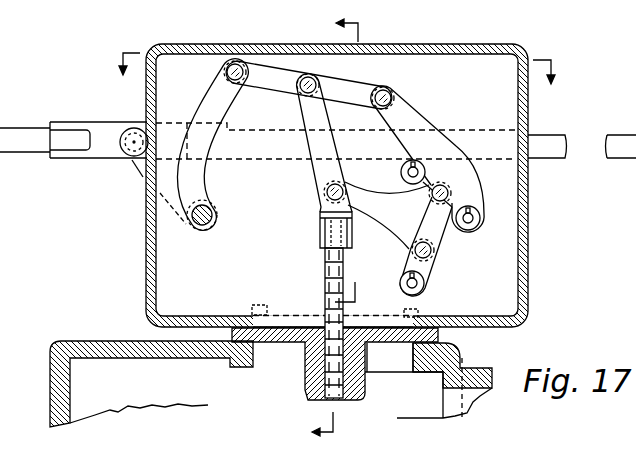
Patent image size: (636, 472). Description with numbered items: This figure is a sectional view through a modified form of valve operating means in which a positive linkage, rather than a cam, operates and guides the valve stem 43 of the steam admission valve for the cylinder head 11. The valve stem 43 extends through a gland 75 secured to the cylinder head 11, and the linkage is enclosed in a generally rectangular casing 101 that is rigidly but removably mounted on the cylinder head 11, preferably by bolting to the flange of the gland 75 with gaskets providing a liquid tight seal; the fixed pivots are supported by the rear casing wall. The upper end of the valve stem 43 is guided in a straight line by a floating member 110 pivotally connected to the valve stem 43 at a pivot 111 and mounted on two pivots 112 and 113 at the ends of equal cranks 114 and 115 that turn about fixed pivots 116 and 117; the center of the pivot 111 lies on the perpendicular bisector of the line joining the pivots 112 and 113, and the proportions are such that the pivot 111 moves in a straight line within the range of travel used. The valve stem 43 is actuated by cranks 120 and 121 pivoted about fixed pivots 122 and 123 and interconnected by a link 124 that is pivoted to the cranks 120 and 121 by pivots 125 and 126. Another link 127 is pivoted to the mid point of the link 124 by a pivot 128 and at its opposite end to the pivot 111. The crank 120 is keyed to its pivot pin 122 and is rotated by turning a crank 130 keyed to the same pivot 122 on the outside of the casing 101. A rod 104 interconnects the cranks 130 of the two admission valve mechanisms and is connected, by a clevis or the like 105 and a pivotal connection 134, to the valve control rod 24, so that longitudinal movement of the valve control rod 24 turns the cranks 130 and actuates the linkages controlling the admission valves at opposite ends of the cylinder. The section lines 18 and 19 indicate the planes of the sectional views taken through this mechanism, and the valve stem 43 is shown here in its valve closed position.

The cylinder head 11 is at (66, 340).
The section line 18 is at (334, 80).
The section line 19 is at (322, 230).
The valve control rod 24 is at (32, 128).
The valve stem 43 is at (326, 288).
The gland 75 is at (364, 392).
The casing 101 is at (193, 44).
The rod 104 is at (608, 163).
The clevis 105 is at (73, 150).
The floating member 110 is at (381, 197).
The pivot 111 is at (326, 190).
The pivot 112 is at (433, 251).
The pivot 113 is at (450, 190).
The crank 114 is at (430, 272).
The crank 115 is at (418, 183).
The fixed pivot 116 is at (400, 288).
The fixed pivot 117 is at (421, 162).
The crank 120 is at (219, 84).
The crank 121 is at (415, 108).
The fixed pivot 122 is at (215, 223).
The fixed pivot 123 is at (470, 230).
The link 124 is at (283, 75).
The pivot 125 is at (244, 62).
The pivot 126 is at (390, 87).
The link 127 is at (303, 115).
The pivot 128 is at (317, 76).
The crank 130 is at (143, 176).
The pivotal connection 134 is at (134, 127).